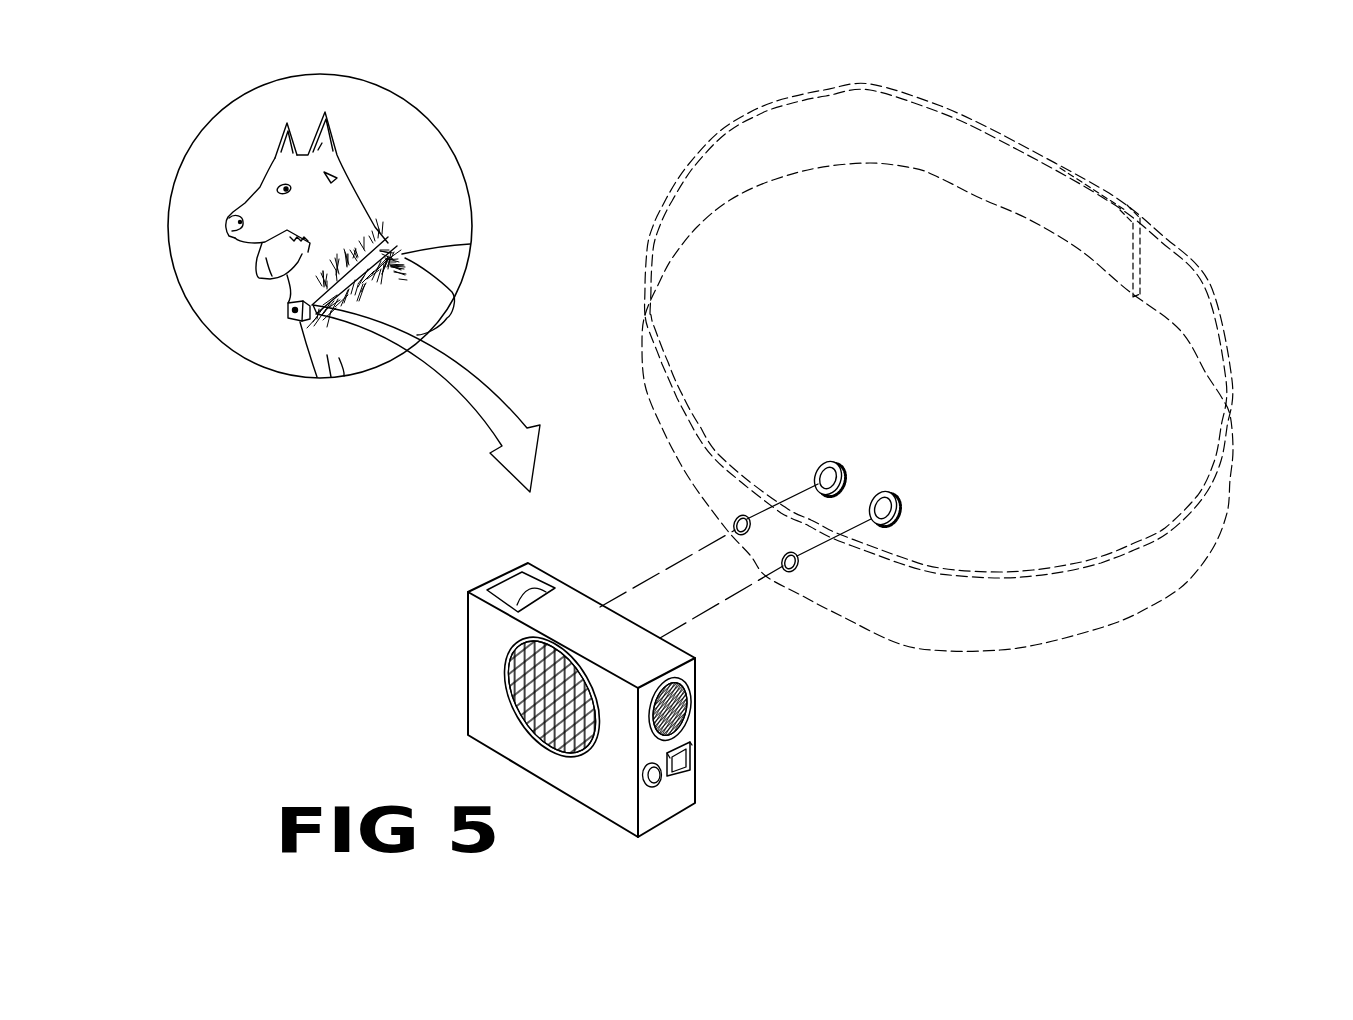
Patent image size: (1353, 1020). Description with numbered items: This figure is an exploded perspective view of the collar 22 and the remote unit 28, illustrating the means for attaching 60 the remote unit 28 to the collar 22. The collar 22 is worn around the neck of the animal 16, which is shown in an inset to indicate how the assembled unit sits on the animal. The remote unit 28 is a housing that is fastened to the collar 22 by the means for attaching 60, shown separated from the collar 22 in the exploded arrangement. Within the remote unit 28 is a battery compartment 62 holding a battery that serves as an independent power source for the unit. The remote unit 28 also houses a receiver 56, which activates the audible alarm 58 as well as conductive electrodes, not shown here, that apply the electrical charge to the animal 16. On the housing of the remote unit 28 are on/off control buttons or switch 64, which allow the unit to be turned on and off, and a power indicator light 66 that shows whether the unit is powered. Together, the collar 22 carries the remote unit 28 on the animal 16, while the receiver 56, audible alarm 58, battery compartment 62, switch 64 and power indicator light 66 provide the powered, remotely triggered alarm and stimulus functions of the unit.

The animal 16 is at (404, 166).
The collar 22 is at (1182, 250).
The remote unit 28 is at (468, 655).
The receiver 56 is at (547, 703).
The audible alarm 58 is at (687, 705).
The means for attaching 60 is at (842, 470).
The battery compartment 62 is at (520, 588).
The on/off control buttons or switch 64 is at (690, 765).
The power indicator light 66 is at (656, 779).